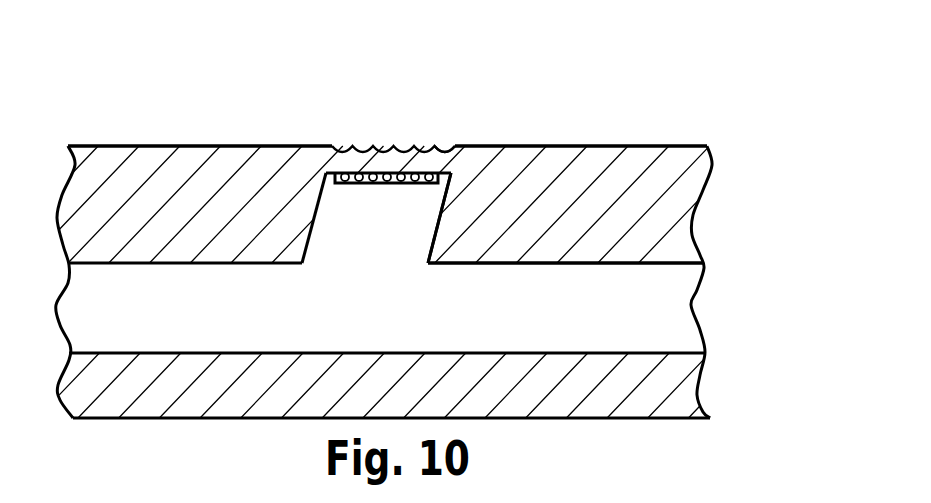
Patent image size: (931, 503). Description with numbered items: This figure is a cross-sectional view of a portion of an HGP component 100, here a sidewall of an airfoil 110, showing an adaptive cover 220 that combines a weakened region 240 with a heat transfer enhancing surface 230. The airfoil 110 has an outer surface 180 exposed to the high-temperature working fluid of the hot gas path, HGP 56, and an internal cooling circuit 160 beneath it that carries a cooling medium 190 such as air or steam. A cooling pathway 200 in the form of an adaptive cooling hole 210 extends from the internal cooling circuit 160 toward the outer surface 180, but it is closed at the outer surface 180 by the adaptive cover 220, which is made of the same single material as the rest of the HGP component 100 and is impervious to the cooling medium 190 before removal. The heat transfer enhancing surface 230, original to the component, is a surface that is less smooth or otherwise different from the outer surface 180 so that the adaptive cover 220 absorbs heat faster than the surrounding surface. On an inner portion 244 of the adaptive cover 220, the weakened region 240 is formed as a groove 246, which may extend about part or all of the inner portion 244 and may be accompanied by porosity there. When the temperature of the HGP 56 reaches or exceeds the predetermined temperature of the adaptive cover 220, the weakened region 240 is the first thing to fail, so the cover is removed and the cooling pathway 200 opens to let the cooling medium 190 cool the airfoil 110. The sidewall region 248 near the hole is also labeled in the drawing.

The HGP 56 is at (360, 78).
The HGP component 100 is at (738, 212).
The airfoil 110 is at (690, 234).
The internal cooling circuit 160 is at (693, 306).
The outer surface 180 is at (197, 146).
The cooling medium 190 is at (693, 305).
The cooling pathway 200 is at (457, 245).
The adaptive cooling hole 210 is at (335, 248).
The adaptive cover 220 is at (397, 163).
The heat transfer enhancing surface 230 is at (433, 148).
The weakened region 240 is at (447, 174).
The inner portion 244 is at (360, 184).
The groove 246 is at (447, 174).
The inner wall of opening 248 is at (419, 184).